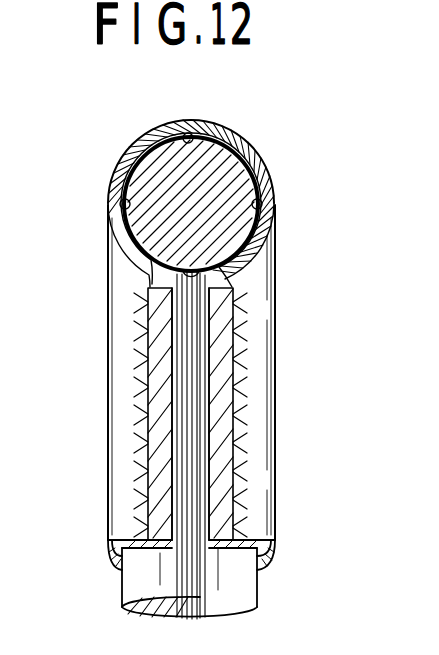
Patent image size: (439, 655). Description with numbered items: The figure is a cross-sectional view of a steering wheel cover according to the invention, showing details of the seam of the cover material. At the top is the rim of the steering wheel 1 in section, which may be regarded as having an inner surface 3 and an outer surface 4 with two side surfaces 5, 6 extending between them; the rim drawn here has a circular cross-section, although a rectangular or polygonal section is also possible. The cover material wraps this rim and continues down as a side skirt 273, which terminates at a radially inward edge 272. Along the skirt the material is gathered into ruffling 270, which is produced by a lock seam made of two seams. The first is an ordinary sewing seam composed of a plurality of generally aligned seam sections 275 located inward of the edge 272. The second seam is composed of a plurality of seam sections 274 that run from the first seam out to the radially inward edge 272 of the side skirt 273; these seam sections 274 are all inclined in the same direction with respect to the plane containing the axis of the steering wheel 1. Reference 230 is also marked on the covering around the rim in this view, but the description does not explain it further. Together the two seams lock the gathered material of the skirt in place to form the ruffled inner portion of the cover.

The steering wheel 1 is at (243, 146).
The inner surface 3 is at (212, 264).
The outer surface 4 is at (186, 133).
The side surface 5 is at (110, 205).
The side surface 6 is at (278, 208).
The outer sheath ring 230 is at (119, 145).
The ruffling 270 is at (133, 356).
The radially inward edge 272 is at (140, 506).
The side skirt 273 is at (137, 468).
The seam sections 274 is at (148, 433).
The seam sections 275 is at (145, 300).